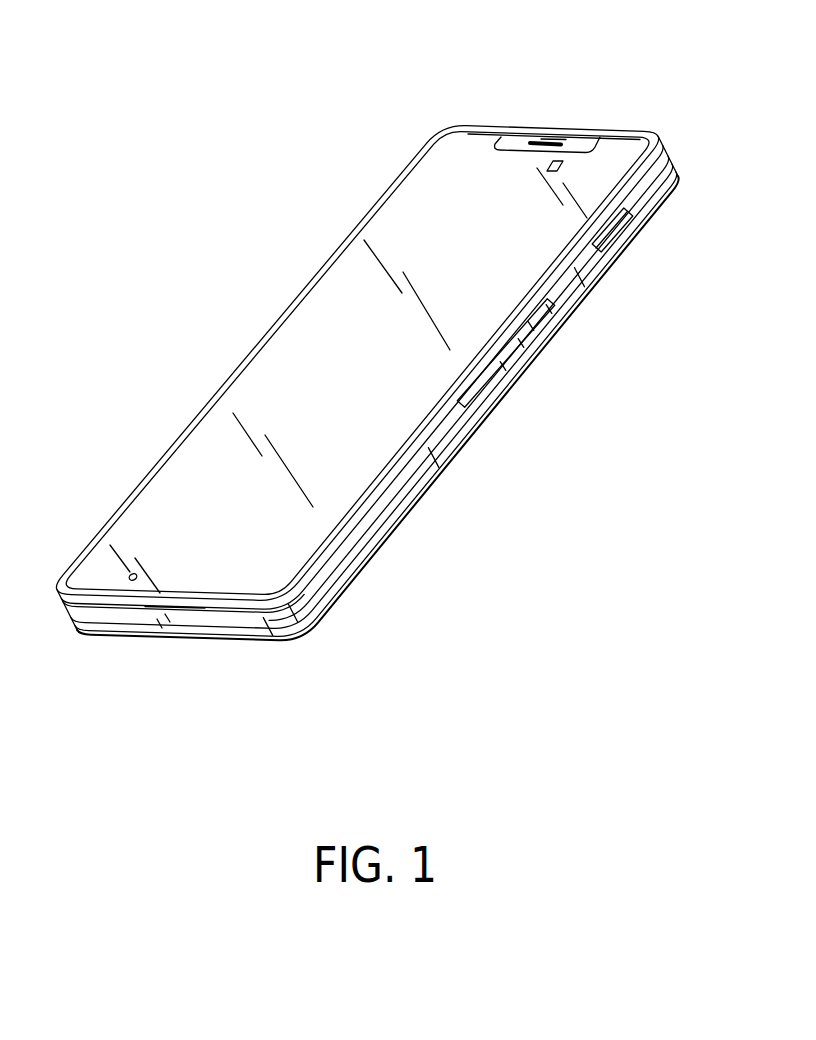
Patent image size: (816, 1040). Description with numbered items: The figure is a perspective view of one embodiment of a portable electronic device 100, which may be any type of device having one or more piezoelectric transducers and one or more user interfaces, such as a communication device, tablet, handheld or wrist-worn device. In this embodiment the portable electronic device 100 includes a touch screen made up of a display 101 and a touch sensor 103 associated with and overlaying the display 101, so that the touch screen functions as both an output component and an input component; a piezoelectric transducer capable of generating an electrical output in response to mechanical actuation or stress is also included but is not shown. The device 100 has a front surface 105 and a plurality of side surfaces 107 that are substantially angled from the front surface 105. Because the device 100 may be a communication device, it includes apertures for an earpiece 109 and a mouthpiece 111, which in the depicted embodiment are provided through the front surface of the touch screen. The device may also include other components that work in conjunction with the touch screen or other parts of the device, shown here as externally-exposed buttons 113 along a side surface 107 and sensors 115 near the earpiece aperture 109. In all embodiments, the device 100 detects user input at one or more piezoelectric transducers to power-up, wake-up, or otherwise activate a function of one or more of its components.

The portable electronic device 100 is at (95, 41).
The display 101 is at (344, 363).
The touch sensor 103 is at (200, 480).
The front surface 105 is at (218, 600).
The side surfaces 107 is at (634, 131).
The earpiece aperture 109 is at (521, 150).
The mouthpiece aperture 111 is at (129, 577).
The buttons 113 is at (622, 229).
The sensors 115 is at (557, 157).